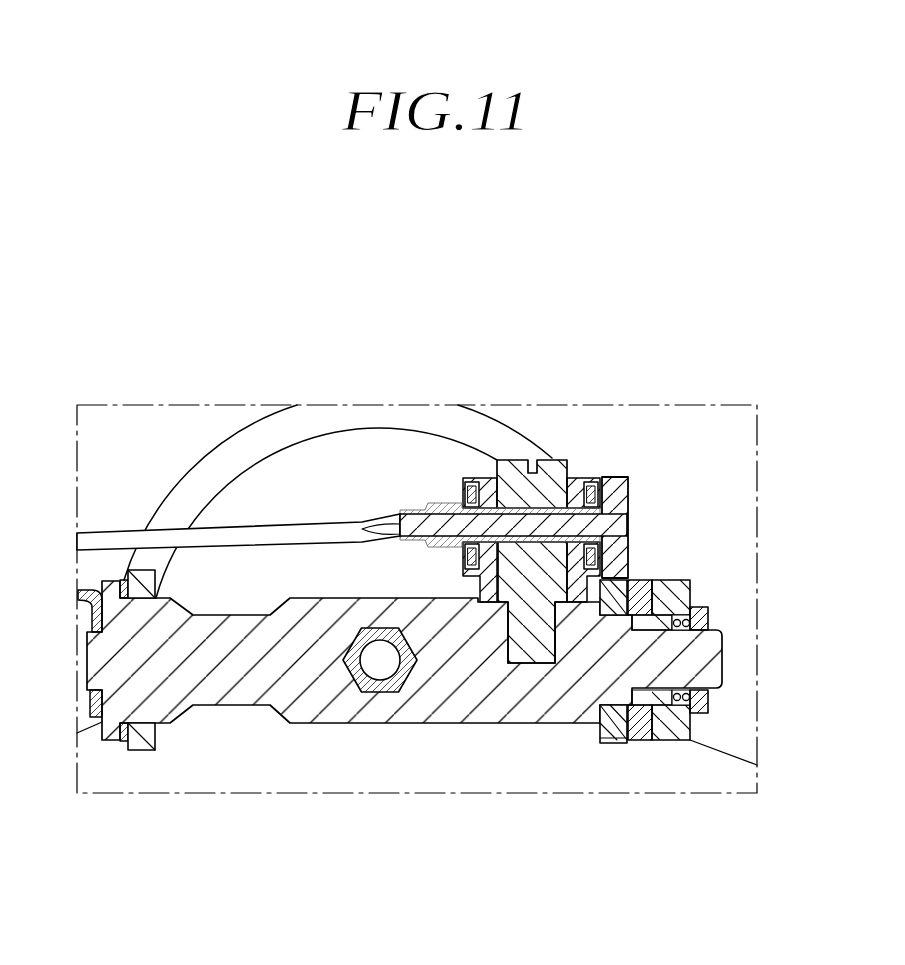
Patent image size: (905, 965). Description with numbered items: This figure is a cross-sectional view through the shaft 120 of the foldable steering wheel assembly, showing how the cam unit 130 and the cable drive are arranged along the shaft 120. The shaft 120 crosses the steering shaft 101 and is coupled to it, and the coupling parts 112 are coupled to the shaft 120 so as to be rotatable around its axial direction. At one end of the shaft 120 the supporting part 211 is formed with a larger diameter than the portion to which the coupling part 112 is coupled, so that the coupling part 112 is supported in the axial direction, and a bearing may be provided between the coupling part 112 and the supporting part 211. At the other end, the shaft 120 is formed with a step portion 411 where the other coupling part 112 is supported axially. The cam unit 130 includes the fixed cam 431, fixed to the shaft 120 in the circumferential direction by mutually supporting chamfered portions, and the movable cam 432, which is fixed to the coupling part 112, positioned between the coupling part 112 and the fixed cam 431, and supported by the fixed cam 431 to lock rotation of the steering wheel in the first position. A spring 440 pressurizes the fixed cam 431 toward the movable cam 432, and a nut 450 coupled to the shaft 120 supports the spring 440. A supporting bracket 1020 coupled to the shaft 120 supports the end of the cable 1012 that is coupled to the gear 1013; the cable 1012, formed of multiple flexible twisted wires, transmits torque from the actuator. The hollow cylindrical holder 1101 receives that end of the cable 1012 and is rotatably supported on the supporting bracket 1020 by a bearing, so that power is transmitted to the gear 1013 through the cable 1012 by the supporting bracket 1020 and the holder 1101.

The steering shaft 101 is at (378, 693).
The shaft 120 is at (245, 690).
The supporting part 211 is at (113, 750).
The coupling part 112 is at (145, 743).
The cable 1012 is at (252, 537).
The holder 1101 is at (437, 518).
The supporting bracket 1020 is at (577, 490).
The gear 1013 is at (617, 500).
The step portion 411 is at (610, 728).
The movable cam 432 is at (640, 728).
The fixed cam 431 is at (672, 730).
The cam unit 130 is at (708, 853).
The spring 440 is at (708, 614).
The nut 450 is at (708, 698).